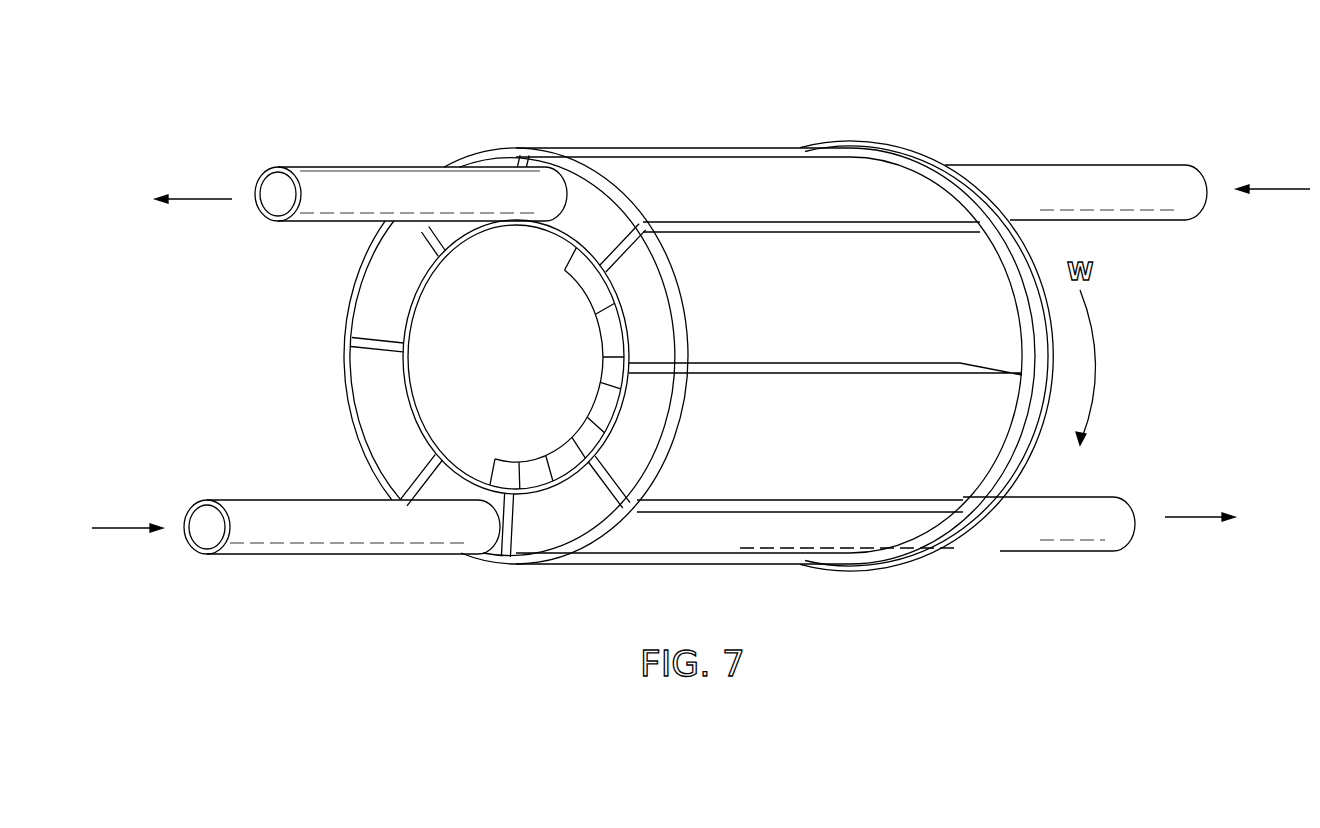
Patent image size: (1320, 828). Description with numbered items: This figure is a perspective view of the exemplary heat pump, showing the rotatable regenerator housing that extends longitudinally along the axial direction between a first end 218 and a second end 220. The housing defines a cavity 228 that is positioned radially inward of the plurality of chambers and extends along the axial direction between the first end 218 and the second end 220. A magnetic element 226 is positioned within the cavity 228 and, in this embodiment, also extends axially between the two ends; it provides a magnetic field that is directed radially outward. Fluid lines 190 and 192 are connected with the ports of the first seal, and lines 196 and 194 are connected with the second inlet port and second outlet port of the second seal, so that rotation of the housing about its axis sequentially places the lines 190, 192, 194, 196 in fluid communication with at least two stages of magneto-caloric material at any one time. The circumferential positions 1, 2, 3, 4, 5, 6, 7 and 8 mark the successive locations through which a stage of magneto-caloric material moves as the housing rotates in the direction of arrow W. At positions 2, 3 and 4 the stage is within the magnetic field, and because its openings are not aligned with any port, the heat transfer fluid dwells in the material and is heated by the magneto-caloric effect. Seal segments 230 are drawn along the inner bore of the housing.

The line 190 is at (1120, 187).
The line 192 is at (338, 187).
The line 194 is at (262, 523).
The line 196 is at (1052, 525).
The first end 218 is at (446, 140).
The second end 220 is at (852, 118).
The magnetic element 226 is at (570, 261).
The cavity 228 is at (432, 373).
The seal segments 230 is at (592, 437).
The position 1 is at (557, 193).
The position 2 is at (627, 271).
The position 3 is at (825, 404).
The position 4 is at (592, 492).
The position 5 is at (437, 487).
The position 6 is at (408, 452).
The position 7 is at (377, 310).
The position 8 is at (494, 157).